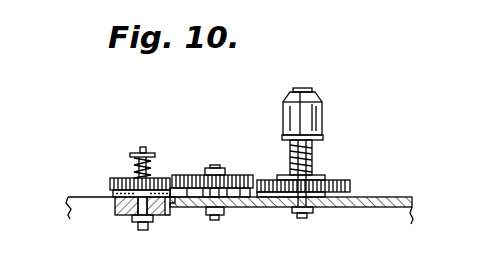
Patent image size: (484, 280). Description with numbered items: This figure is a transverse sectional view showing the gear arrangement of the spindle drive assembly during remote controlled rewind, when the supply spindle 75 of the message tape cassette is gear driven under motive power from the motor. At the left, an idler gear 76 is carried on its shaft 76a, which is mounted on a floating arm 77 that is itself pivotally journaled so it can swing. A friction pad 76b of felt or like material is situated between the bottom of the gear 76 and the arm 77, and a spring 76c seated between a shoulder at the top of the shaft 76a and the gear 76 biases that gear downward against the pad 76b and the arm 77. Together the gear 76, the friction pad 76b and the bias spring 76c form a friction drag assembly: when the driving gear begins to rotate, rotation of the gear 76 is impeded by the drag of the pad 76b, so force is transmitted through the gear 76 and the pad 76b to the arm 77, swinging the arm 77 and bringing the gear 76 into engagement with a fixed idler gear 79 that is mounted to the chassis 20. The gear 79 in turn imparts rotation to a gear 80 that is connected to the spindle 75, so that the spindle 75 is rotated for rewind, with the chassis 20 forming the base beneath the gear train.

The chassis 20 is at (393, 198).
The supply spindle 75 is at (323, 116).
The idler gear 76 is at (115, 178).
The shaft 76a is at (143, 147).
The friction pad 76b is at (117, 194).
The spring 76c is at (155, 158).
The floating arm 77 is at (118, 216).
The fixed idler gear 79 is at (245, 175).
The gear 80 is at (345, 180).